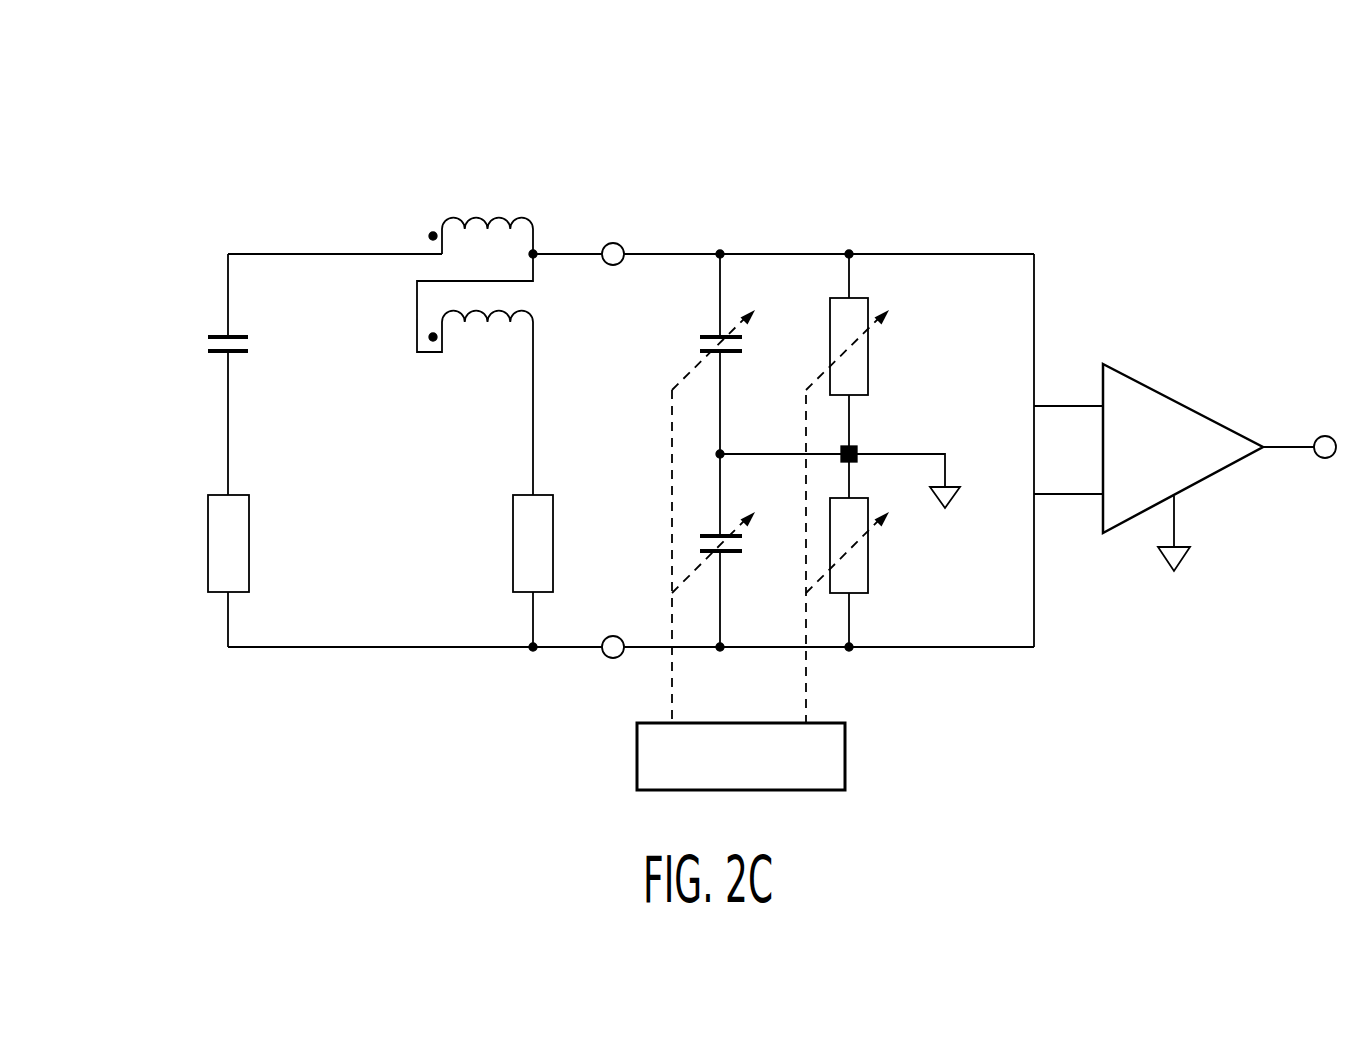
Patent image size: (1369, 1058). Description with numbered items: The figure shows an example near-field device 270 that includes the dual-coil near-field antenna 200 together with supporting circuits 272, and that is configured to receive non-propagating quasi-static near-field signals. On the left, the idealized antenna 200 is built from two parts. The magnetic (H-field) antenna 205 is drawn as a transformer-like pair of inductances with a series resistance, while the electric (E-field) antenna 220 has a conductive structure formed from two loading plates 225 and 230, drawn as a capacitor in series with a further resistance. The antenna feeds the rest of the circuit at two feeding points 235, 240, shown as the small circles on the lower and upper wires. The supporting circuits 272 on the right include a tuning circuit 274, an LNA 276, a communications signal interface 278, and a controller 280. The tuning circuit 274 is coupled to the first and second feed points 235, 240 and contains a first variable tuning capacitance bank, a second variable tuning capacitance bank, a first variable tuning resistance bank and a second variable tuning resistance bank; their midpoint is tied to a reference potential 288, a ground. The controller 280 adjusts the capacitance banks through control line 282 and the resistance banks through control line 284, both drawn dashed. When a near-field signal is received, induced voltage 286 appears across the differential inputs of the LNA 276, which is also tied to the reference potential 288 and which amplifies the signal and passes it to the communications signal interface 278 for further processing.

The near-field device 270 is at (131, 118).
The dual-coil near-field antenna 200 is at (643, 115).
The supporting circuits 272 is at (1305, 115).
The electric (E-field) antenna 220 is at (357, 243).
The magnetic (H-field) antenna 205 is at (577, 243).
The tuning circuit 274 is at (875, 243).
The loading plate 230 is at (250, 333).
The loading plate 225 is at (250, 355).
The feeding point 240 is at (613, 267).
The feeding point 235 is at (613, 634).
The control line 282 is at (672, 443).
The control line 284 is at (806, 405).
The controller 280 is at (637, 757).
The induced voltage 286 is at (1013, 430).
The reference potential 288 is at (948, 510).
The LNA 276 is at (1176, 394).
The communications signal interface 278 is at (1325, 436).